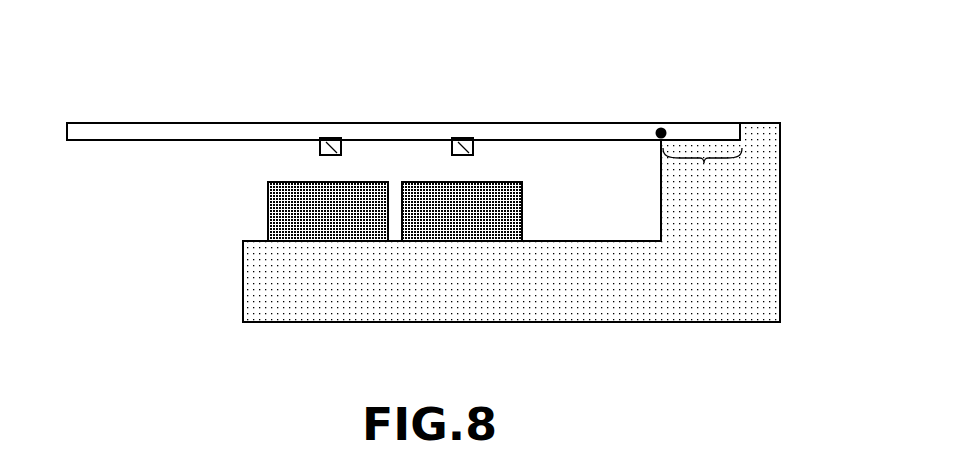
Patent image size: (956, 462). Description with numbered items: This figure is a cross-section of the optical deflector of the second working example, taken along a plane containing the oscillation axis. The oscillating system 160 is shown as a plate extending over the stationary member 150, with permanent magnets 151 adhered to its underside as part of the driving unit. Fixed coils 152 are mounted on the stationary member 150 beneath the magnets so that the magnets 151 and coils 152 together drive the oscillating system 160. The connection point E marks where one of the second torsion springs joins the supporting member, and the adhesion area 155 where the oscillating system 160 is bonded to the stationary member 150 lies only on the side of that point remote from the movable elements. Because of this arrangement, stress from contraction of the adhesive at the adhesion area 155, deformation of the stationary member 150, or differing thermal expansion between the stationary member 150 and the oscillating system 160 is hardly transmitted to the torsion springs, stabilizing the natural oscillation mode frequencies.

The stationary member 150 is at (762, 263).
The permanent magnet 151 is at (440, 138).
The fixed coil 152 is at (280, 243).
The adhesion area 155 is at (704, 163).
The oscillating system 160 is at (141, 122).
The connection point E is at (666, 118).